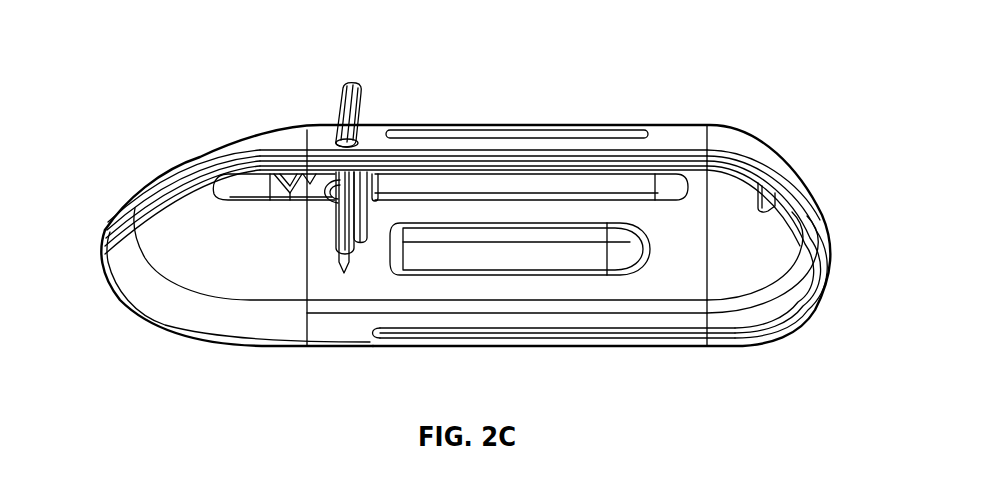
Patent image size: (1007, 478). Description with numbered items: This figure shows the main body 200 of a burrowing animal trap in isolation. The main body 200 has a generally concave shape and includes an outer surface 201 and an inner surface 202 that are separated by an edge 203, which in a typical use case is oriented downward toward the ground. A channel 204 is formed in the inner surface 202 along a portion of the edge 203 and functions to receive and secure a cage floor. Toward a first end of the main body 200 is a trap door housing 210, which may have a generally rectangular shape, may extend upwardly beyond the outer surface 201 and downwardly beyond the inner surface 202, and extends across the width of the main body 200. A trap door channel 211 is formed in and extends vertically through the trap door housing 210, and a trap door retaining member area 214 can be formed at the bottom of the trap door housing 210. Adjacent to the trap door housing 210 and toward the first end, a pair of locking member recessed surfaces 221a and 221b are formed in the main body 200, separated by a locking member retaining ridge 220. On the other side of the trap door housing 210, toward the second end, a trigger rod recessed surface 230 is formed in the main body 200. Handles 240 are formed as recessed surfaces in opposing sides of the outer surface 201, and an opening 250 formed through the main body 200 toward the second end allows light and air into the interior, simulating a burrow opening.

The main body 200 is at (158, 44).
The outer surface 201 is at (767, 157).
The inner surface 202 is at (172, 308).
The edge 203 is at (106, 248).
The channel 204 is at (583, 333).
The trap door housing 210 is at (360, 97).
The trap door channel 211 is at (342, 275).
The trap door retaining member area 214 is at (327, 203).
The locking member retaining ridge 220 is at (287, 192).
The locking member recessed surface 221a is at (241, 186).
The locking member recessed surface 221b is at (320, 180).
The trigger rod recessed surface 230 is at (551, 187).
The handles 240 is at (470, 256).
The opening 250 is at (768, 197).